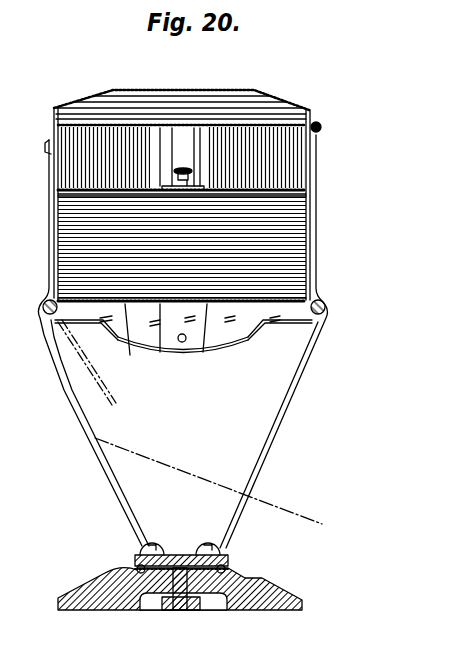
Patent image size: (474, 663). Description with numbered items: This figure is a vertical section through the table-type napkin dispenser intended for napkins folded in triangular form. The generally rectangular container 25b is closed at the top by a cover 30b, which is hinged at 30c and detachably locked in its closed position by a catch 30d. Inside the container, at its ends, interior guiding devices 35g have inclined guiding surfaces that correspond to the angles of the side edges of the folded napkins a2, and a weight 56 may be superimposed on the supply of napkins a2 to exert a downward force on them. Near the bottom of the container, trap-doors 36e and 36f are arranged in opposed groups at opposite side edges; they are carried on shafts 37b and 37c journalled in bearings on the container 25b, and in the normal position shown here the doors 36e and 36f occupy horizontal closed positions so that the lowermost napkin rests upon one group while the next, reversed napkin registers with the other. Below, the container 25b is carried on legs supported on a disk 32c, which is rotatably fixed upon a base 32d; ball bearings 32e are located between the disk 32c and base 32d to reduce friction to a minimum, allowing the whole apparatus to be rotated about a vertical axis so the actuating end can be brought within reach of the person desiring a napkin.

The cover 30b is at (272, 98).
The hinge 30c is at (322, 128).
The catch 30d is at (48, 142).
The guiding device 35g is at (151, 142).
The weight 56 is at (159, 184).
The container 25b is at (318, 176).
The shaft 37b is at (43, 307).
The shaft 37c is at (327, 308).
The trap-doors 36e is at (95, 368).
The trap-doors 36f is at (239, 308).
The napkins a2 is at (288, 504).
The disk 32c is at (229, 561).
The base 32d is at (92, 594).
The ball bearings 32e is at (137, 568).